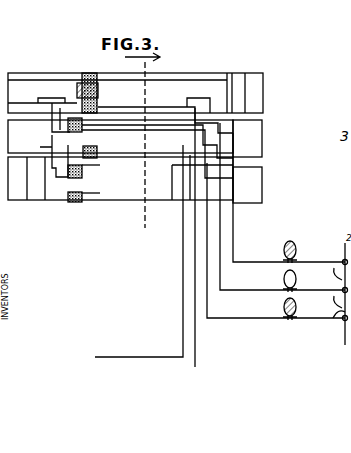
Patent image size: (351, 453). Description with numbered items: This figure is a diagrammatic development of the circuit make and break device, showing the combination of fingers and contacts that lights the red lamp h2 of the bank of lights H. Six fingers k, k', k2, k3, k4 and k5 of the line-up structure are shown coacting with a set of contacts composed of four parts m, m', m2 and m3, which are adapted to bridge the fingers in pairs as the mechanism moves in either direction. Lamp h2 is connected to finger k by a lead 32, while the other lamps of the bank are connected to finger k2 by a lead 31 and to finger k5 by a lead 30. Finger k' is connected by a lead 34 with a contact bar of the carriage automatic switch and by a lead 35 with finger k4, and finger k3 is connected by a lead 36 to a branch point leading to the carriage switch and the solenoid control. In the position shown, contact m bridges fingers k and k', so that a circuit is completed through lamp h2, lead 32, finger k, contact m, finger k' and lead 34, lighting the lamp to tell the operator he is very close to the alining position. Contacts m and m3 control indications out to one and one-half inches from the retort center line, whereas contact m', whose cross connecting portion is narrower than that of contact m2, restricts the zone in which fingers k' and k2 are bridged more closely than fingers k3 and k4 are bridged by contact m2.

The finger k is at (79, 81).
The finger k' is at (75, 89).
The finger k2 is at (85, 130).
The finger k3 is at (96, 158).
The finger k4 is at (72, 183).
The finger k5 is at (78, 203).
The contact m is at (135, 93).
The contact m' is at (42, 115).
The contact m2 is at (135, 148).
The contact m3 is at (35, 183).
The lead 30 is at (245, 326).
The lead 31 is at (245, 298).
The lead 32 is at (245, 270).
The lead 34 is at (196, 347).
The lead 35 is at (50, 127).
The lead 36 is at (182, 278).
The bank of lights H is at (280, 279).
The lamp h2 is at (294, 246).